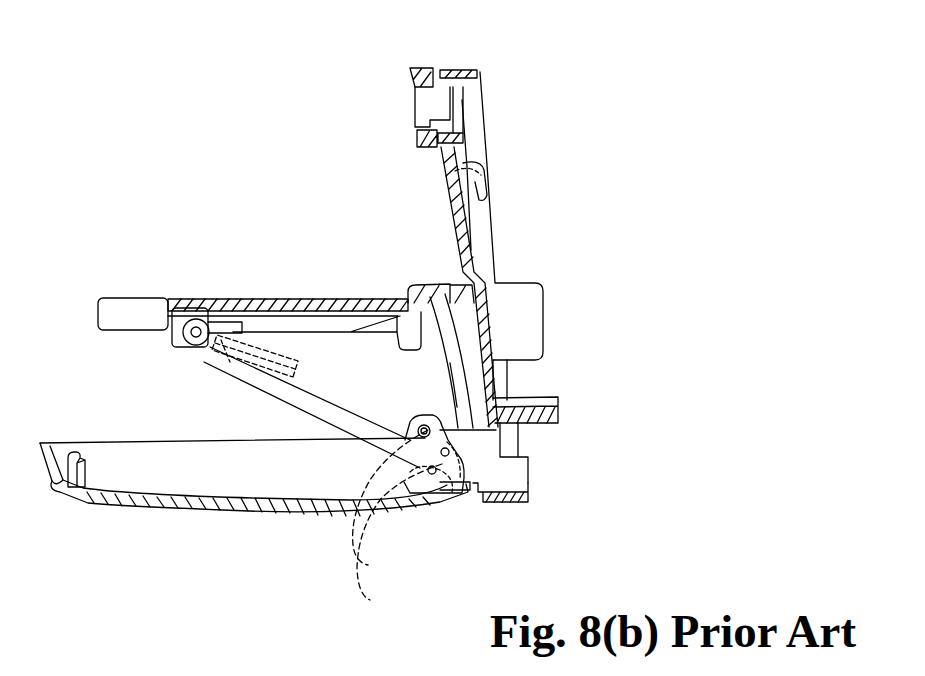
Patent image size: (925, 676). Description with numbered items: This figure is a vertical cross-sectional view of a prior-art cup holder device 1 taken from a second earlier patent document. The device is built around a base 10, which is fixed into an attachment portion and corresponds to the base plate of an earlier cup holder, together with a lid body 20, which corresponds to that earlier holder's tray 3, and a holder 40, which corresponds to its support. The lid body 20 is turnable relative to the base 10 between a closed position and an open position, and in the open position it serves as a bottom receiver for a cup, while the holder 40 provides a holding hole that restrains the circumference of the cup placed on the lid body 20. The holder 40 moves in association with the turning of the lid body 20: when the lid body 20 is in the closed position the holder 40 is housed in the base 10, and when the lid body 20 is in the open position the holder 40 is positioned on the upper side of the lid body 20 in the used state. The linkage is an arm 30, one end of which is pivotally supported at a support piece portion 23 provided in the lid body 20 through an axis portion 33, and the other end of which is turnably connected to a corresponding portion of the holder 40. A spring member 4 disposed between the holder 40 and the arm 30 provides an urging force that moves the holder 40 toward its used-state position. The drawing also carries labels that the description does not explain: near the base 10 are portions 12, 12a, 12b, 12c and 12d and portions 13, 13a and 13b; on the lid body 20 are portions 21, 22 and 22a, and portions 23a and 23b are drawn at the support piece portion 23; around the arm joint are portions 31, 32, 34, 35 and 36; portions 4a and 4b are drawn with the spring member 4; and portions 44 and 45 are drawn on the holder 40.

The cup holder device 1 is at (255, 216).
The base 10 is at (495, 205).
The upper engaging portion 12 is at (338, 70).
The engaging portion part 12a is at (410, 122).
The engaging portion part 12b is at (412, 77).
The engaging portion part 12c is at (418, 137).
The engaging portion part 12d is at (430, 100).
The guide portion 13 is at (372, 202).
The guide portion part 13a is at (442, 296).
The guide portion part 13b is at (421, 298).
The lid body 20 is at (223, 508).
The lower bracket upper edge 21 is at (214, 456).
The engaging portion 22 is at (91, 447).
The engaging tab 22a is at (75, 450).
The support piece portion 23 is at (463, 486).
The pivot plate 23a is at (434, 454).
The pivot portion part 23b is at (436, 422).
The tray 3 is at (445, 472).
The arm 30 is at (285, 401).
The rotation range 31 is at (401, 558).
The spring unit 32 is at (181, 367).
The axis portion 33 is at (399, 542).
The rotation locus 34 is at (390, 508).
The spring 35 is at (206, 353).
The spring holder 36 is at (222, 378).
The spring member 4 is at (323, 338).
The lock member part 4a is at (268, 366).
The lock member plate 4b is at (267, 330).
The holder 40 is at (195, 298).
The arm body 44 is at (259, 293).
The hinge pin 45 is at (178, 337).